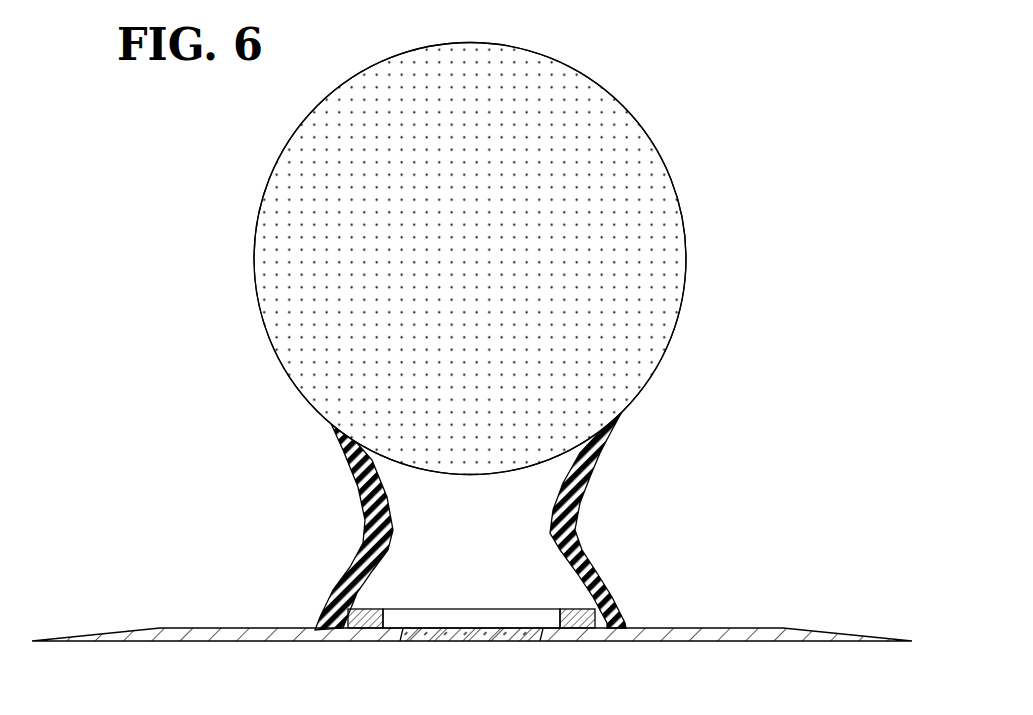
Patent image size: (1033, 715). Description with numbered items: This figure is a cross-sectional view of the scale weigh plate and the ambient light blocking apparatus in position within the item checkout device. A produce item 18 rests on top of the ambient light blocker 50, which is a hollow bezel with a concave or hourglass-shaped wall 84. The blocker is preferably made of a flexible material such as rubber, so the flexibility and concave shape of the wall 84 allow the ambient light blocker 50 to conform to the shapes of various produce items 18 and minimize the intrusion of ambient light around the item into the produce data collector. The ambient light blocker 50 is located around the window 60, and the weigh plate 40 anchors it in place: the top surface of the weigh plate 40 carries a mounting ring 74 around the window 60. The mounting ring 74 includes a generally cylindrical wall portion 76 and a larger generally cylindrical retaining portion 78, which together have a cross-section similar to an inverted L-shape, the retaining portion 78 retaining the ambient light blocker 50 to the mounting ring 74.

The produce item 18 is at (620, 120).
The weigh plate 40 is at (118, 628).
The ambient light blocker 50 is at (497, 519).
The window 60 is at (468, 637).
The mounting ring 74 is at (612, 595).
The wall portion 76 is at (327, 625).
The retaining portion 78 is at (332, 610).
The wall 84 is at (573, 520).